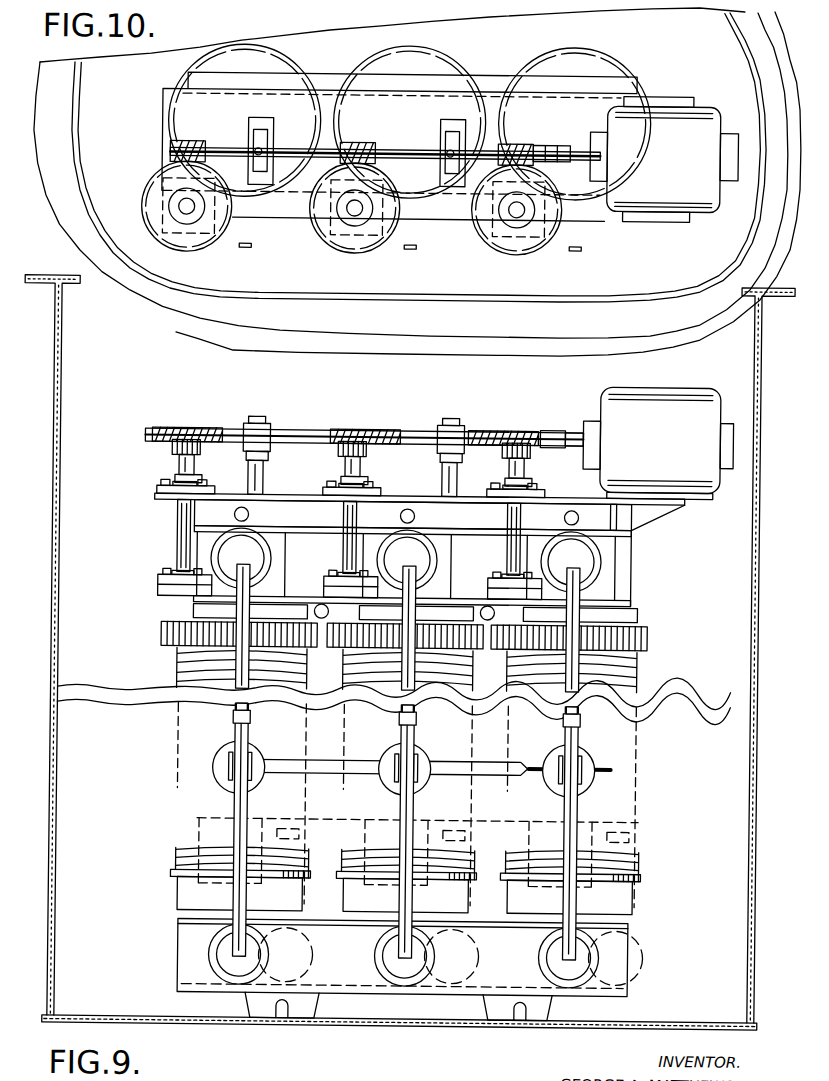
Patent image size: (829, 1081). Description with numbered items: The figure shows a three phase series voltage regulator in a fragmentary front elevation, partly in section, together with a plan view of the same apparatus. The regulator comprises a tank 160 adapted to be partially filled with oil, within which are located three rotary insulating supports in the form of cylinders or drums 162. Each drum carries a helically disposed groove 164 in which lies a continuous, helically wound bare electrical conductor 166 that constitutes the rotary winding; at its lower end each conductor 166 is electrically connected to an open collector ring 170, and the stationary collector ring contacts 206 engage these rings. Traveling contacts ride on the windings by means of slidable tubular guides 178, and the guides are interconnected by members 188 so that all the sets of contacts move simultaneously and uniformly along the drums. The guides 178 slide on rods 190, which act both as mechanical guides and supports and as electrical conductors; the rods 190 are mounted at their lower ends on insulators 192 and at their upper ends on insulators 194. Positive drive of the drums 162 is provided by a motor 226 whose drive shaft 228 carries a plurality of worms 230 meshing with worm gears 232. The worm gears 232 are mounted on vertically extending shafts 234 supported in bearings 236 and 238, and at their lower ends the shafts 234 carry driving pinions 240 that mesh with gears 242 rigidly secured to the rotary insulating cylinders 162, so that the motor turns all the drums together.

In FIG. 9, the tank 160 is at (59, 540).
In FIG. 9, the rotary insulating cylinders or drums 162 is at (633, 757).
In FIG. 9, the helically disposed groove 164 is at (463, 661).
In FIG. 9, the bare electrical conductor 166 is at (633, 650).
In FIG. 9, the open collector ring 170 is at (644, 877).
In FIG. 9, the slidable guide 178 is at (409, 755).
In FIG. 9, the interconnecting members 188 is at (359, 757).
In FIG. 9, the rods 190 is at (409, 815).
In FIG. 9, the lower insulators 192 is at (207, 956).
In FIG. 9, the upper insulators 194 is at (267, 565).
In FIG. 9, the stationary collector ring contacts 206 is at (644, 828).
In FIG. 10, the motor 226 is at (664, 159).
In FIG. 9, the motor 226 is at (658, 443).
In FIG. 10, the drive shaft 228 is at (398, 150).
In FIG. 9, the drive shaft 228 is at (410, 431).
In FIG. 10, the worms 230 is at (516, 148).
In FIG. 9, the worms 230 is at (510, 430).
In FIG. 10, the worm gears 232 is at (493, 252).
In FIG. 9, the worm gears 232 is at (480, 425).
In FIG. 9, the vertically extending shafts 234 is at (340, 564).
In FIG. 9, the bearing 236 is at (527, 491).
In FIG. 9, the bearing 238 is at (494, 577).
In FIG. 10, the driving pinions 240 is at (363, 231).
In FIG. 9, the driving pinions 240 is at (169, 646).
In FIG. 10, the gears 242 is at (621, 71).
In FIG. 9, the gears 242 is at (637, 631).